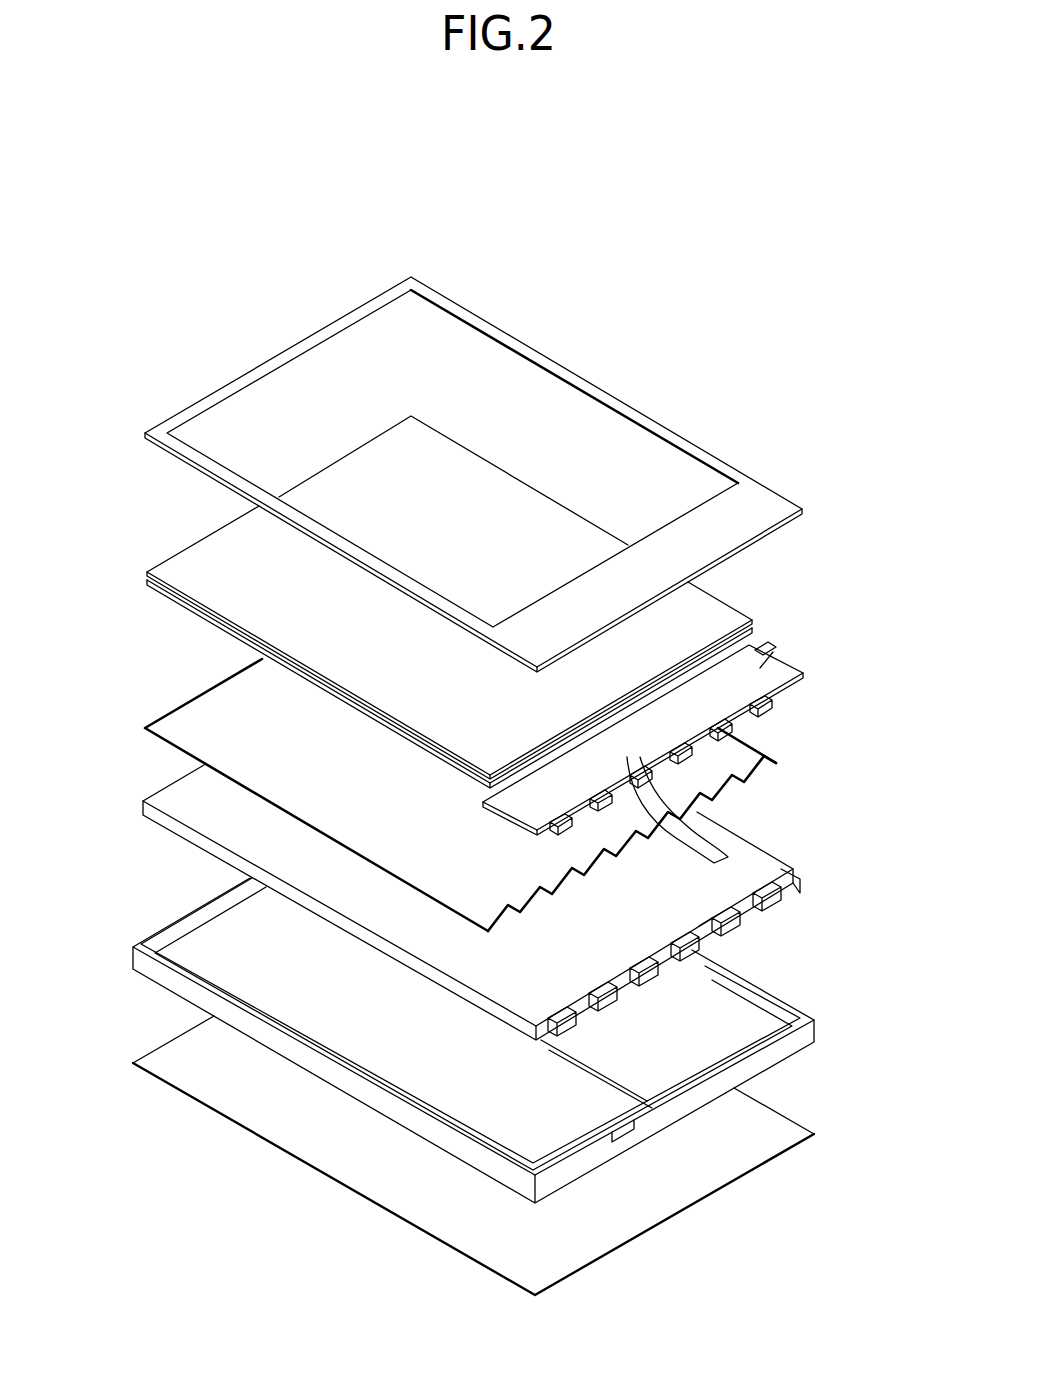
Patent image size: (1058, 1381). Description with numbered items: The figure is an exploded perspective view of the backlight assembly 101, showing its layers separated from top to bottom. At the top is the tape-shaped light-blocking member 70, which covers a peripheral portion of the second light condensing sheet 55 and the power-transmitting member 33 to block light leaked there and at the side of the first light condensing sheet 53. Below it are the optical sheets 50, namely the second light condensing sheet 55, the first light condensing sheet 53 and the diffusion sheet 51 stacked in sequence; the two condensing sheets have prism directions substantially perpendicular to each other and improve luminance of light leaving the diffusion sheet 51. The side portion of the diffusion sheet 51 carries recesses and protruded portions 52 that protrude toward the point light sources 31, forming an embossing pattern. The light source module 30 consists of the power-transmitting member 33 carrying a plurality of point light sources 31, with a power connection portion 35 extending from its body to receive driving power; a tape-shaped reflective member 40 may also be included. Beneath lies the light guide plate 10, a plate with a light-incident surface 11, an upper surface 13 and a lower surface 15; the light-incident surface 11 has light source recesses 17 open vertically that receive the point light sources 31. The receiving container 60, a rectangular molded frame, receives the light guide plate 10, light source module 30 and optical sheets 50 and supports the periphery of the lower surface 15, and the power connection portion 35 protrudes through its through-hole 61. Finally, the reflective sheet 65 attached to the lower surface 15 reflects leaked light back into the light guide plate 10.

The backlight assembly 101 is at (488, 185).
The light-blocking member 70 is at (178, 414).
The optical sheets 50 is at (423, 745).
The second light condensing sheet 55 is at (167, 561).
The first light condensing sheet 53 is at (165, 594).
The diffusion sheet 51 is at (446, 822).
The protruded portions 52 is at (728, 792).
The light source module 30 is at (692, 752).
The point light sources 31 is at (783, 714).
The power-transmitting member 33 is at (770, 650).
The reflective member 40 is at (790, 688).
The power connection portion 35 is at (660, 803).
The light guide plate 10 is at (522, 902).
The light-incident surface 11 is at (800, 890).
The upper surface 13 is at (790, 867).
The lower surface 15 is at (792, 896).
The light source recesses 17 is at (727, 925).
The receiving container 60 is at (436, 1062).
The through-hole 61 is at (638, 1138).
The reflective sheet 65 is at (150, 1052).